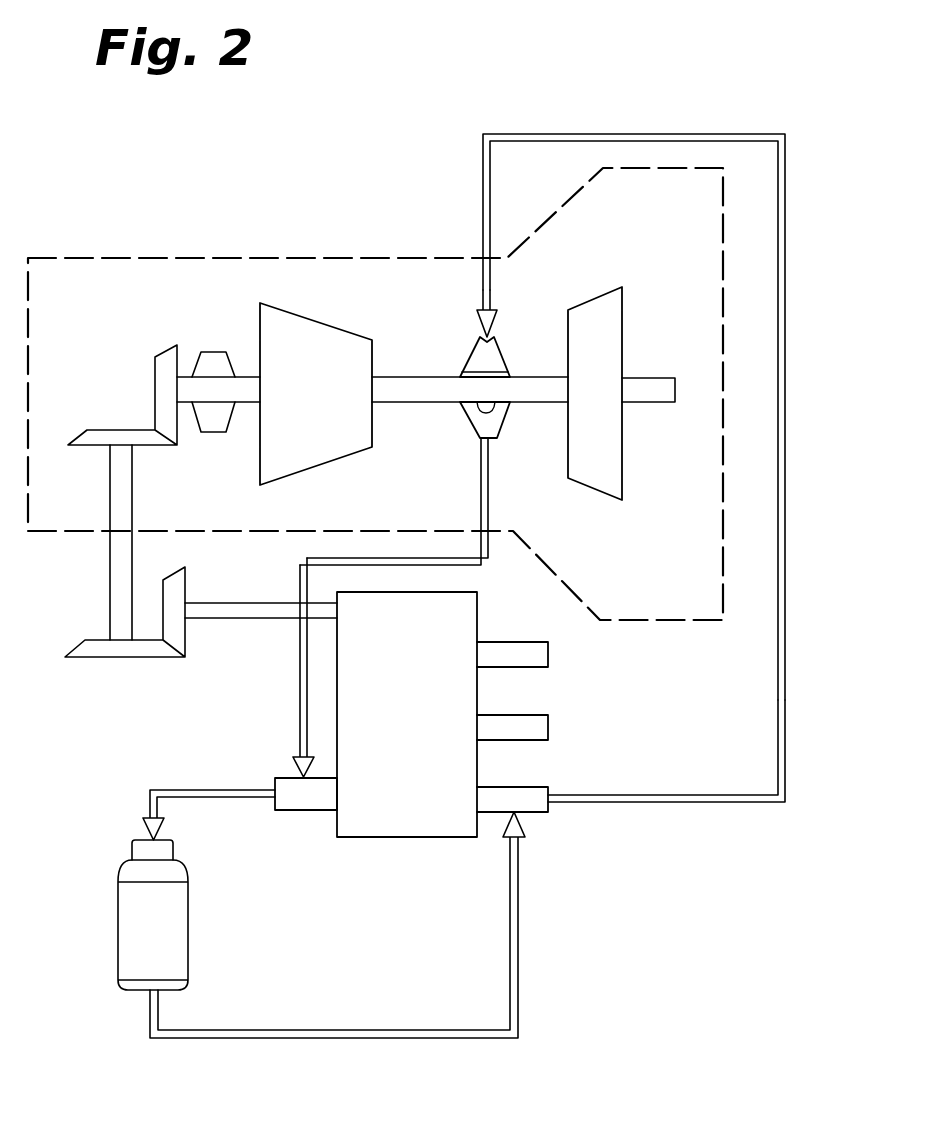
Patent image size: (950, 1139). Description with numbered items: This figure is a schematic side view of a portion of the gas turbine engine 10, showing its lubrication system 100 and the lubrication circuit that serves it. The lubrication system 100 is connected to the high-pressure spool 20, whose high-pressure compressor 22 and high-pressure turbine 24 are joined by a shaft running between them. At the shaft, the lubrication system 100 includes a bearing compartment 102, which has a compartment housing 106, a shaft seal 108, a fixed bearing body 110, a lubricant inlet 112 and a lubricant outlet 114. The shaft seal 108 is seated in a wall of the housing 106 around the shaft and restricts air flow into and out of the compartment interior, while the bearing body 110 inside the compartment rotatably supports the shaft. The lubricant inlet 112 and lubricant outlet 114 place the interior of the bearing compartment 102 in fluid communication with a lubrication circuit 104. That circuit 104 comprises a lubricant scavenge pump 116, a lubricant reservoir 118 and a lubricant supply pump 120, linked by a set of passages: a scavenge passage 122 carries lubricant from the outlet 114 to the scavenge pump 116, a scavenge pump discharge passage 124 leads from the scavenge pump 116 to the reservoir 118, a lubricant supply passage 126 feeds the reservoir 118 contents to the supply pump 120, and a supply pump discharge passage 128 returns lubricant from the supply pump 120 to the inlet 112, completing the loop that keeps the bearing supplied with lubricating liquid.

The gas turbine engine 10 is at (243, 208).
The high-pressure spool 20 is at (382, 258).
The high-pressure compressor 22 is at (310, 320).
The high-pressure turbine 24 is at (610, 287).
The lubrication system 100 is at (552, 837).
The bearing compartment 102 is at (462, 420).
The lubrication circuit 104 is at (805, 265).
The compartment housing 106 is at (506, 358).
The shaft seal 108 is at (460, 377).
The fixed bearing body 110 is at (499, 424).
The lubricant inlet 112 is at (497, 334).
The lubricant outlet 114 is at (477, 447).
The lubricant scavenge pump 116 is at (305, 803).
The lubricant reservoir 118 is at (117, 918).
The lubricant supply pump 120 is at (520, 795).
The scavenge passage 122 is at (298, 690).
The scavenge pump discharge passage 124 is at (195, 790).
The lubricant supply passage 126 is at (333, 1038).
The supply pump discharge passage 128 is at (788, 700).